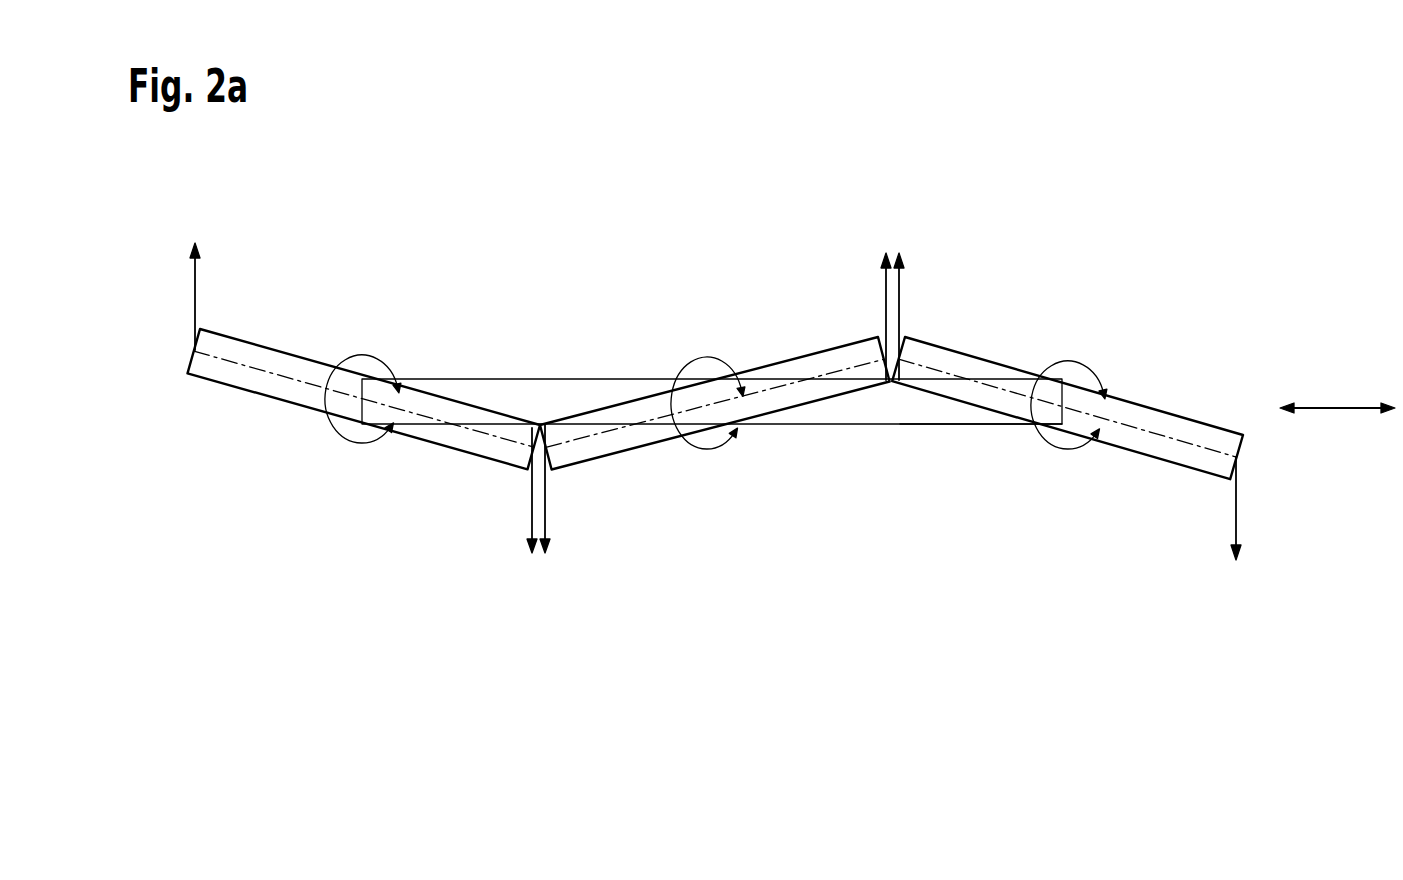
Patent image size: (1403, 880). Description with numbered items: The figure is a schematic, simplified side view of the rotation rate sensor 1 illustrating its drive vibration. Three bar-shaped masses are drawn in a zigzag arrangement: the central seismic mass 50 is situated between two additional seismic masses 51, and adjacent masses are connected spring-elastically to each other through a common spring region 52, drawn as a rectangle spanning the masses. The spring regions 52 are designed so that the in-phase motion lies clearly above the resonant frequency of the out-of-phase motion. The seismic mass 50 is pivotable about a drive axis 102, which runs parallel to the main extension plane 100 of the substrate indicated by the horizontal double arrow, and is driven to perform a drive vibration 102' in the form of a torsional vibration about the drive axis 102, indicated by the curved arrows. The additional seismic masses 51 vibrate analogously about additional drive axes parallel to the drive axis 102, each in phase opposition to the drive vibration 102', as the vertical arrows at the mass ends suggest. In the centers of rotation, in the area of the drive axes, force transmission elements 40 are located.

The rotation rate sensor 1 is at (1192, 260).
The force transmission element 40 is at (928, 408).
The seismic mass 50 is at (607, 443).
The additional seismic masses 51 is at (257, 382).
The spring region 52 is at (548, 428).
The main extension plane 100 is at (1337, 410).
The drive axis 102 is at (715, 349).
The drive vibration 102' is at (714, 464).